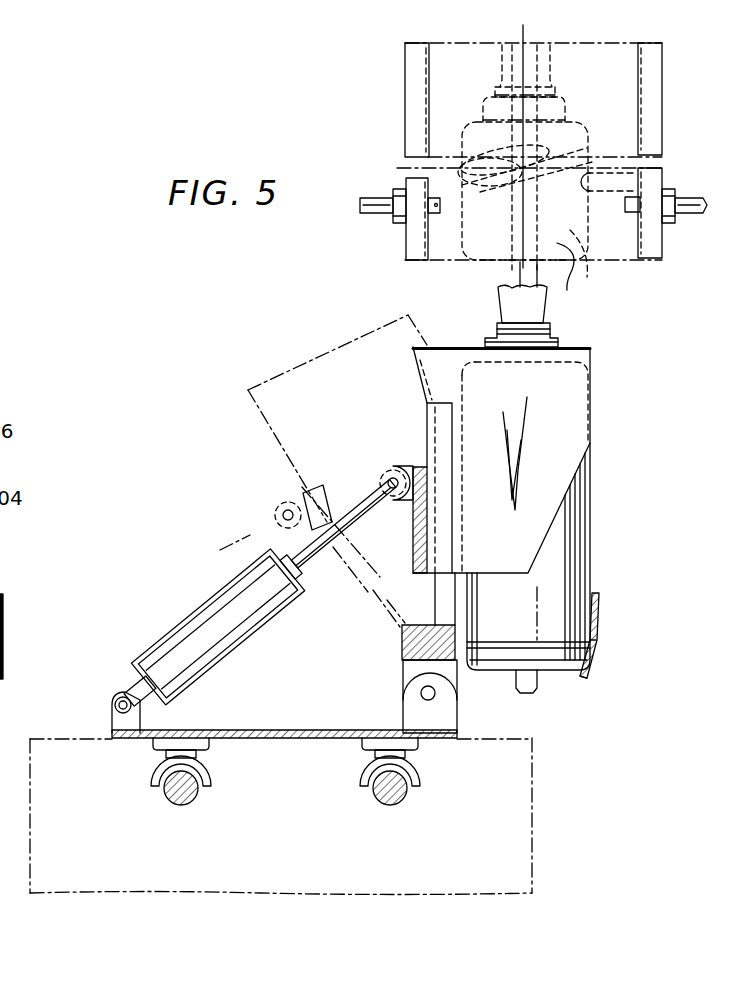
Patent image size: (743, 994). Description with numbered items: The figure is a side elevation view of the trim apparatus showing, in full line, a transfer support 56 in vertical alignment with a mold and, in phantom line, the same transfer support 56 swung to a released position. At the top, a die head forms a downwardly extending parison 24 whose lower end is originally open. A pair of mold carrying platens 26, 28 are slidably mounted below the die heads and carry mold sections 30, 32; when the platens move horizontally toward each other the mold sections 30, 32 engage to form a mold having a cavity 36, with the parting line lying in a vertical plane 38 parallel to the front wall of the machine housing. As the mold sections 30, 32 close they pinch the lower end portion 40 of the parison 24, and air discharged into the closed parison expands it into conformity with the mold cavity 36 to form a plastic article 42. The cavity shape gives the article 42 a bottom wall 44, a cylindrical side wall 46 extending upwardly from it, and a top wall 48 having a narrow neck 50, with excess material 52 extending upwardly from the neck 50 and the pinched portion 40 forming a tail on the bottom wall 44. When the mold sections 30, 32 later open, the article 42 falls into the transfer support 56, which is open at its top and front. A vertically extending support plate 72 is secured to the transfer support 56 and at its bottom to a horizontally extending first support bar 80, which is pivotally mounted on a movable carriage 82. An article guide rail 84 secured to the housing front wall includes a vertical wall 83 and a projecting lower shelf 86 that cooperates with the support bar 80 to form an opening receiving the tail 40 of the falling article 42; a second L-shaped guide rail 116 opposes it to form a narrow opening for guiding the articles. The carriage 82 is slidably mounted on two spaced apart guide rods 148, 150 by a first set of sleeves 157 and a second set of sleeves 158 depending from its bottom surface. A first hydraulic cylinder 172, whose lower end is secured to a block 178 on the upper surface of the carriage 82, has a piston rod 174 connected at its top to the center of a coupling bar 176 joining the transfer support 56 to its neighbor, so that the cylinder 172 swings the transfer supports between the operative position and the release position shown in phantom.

The parison 24 is at (572, 232).
The mold carrying platen 26 is at (417, 238).
The mold carrying platen 28 is at (648, 230).
The mold section 30 is at (427, 223).
The mold section 32 is at (502, 60).
The mold cavity 36 is at (600, 190).
The vertical plane 38 is at (536, 62).
The lower end portion of parison 40 is at (506, 276).
The plastic article 42 is at (460, 192).
The bottom wall 44 is at (557, 255).
The cylindrical side wall 46 is at (463, 135).
The top wall 48 is at (570, 112).
The narrow neck 50 is at (552, 95).
The excess material 52 is at (534, 310).
The transfer support 56 is at (565, 420).
The support plate 72 is at (447, 603).
The first support bar 80 is at (458, 660).
The carriage 82 is at (268, 730).
The vertical wall 83 is at (598, 612).
The article guide rail 84 is at (597, 636).
The lower shelf 86 is at (596, 670).
The second L-shaped guide rail 116 is at (4, 633).
The guide rod 148 is at (194, 792).
The guide rod 150 is at (403, 792).
The sleeves 157 is at (157, 743).
The sleeves 158 is at (416, 745).
The first hydraulic cylinder 172 is at (270, 623).
The piston rod 174 is at (358, 512).
The coupling bar 176 is at (420, 530).
The block 178 is at (118, 722).